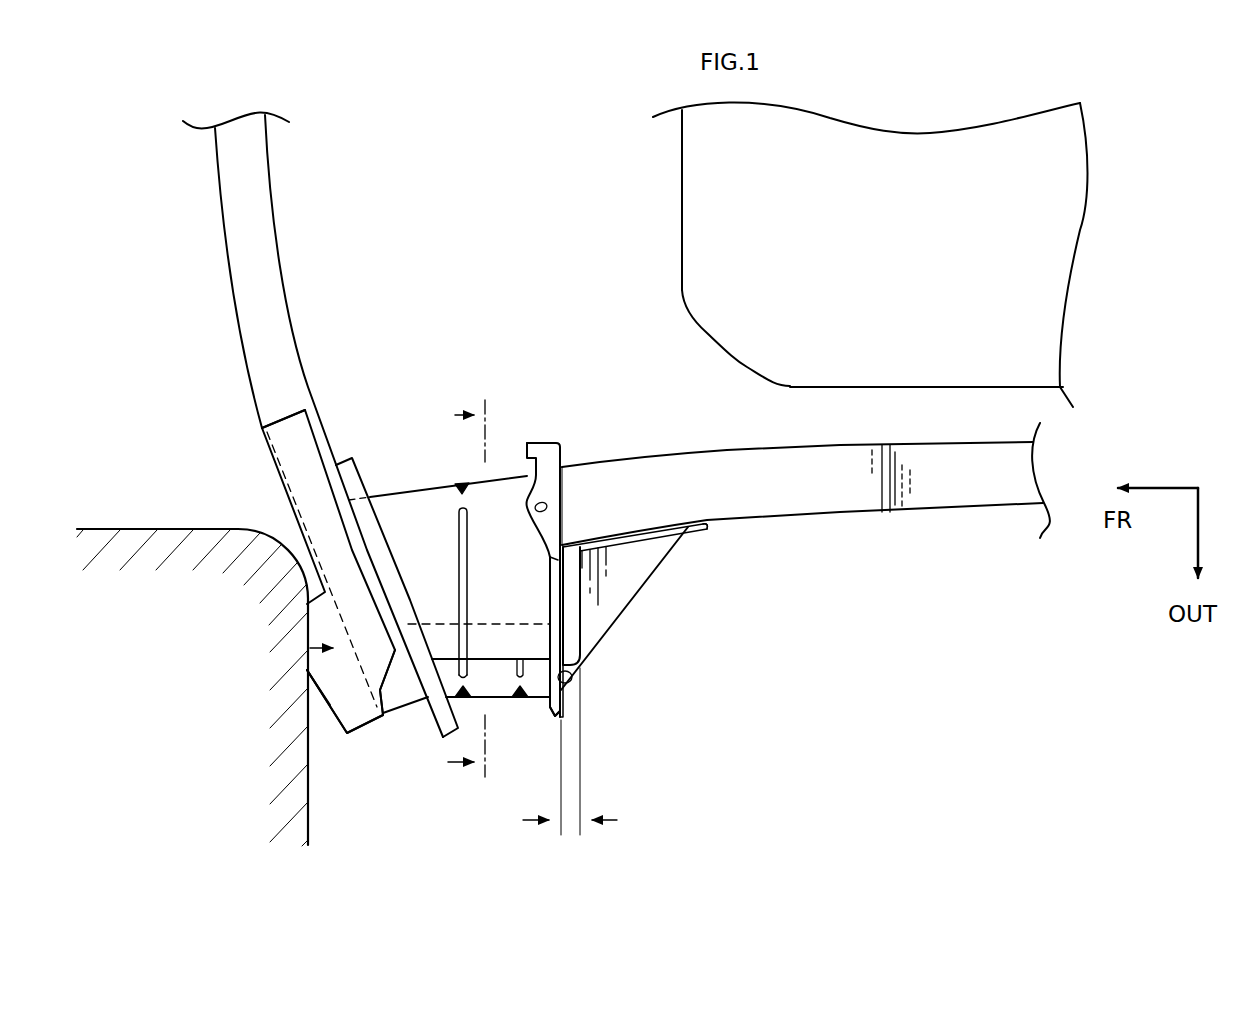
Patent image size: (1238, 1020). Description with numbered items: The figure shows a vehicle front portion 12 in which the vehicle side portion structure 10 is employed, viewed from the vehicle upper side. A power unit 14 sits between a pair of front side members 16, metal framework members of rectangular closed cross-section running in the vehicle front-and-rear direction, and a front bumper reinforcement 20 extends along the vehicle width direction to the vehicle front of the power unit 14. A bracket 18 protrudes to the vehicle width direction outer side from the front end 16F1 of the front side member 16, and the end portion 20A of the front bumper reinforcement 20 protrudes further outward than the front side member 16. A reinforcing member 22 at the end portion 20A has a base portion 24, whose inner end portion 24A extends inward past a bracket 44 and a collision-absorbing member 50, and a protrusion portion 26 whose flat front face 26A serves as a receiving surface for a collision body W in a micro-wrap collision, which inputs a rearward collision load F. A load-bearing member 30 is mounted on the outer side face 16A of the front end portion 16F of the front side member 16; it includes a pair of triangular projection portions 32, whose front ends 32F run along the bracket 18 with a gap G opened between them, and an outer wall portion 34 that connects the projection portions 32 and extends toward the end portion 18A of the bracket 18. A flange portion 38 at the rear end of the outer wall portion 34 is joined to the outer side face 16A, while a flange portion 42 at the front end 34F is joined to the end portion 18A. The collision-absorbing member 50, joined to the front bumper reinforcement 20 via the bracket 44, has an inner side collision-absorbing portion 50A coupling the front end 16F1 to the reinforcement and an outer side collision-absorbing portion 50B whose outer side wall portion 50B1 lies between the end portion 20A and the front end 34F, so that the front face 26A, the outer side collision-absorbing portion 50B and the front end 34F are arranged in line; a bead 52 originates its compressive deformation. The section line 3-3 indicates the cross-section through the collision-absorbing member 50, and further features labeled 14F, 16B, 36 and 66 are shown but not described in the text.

The vehicle side portion structure 10 is at (688, 800).
The vehicle front portion 12 is at (683, 725).
The power unit 14 is at (840, 254).
The front lower end of door 14F is at (725, 323).
The front side member 16 is at (788, 552).
The outer side face 16A is at (780, 518).
The rocker upper wall 16B is at (625, 458).
The front end portion 16F is at (653, 480).
The front end 16F1 is at (563, 467).
The bracket 18 is at (520, 667).
The end portion 18A is at (543, 692).
The front bumper reinforcement 20 is at (291, 473).
The end portion 20A is at (415, 688).
The reinforcing member 22 is at (294, 602).
The base portion 24 is at (329, 582).
The inner end portion 24A is at (298, 437).
The protrusion portion 26 is at (290, 710).
The front face 26A is at (300, 623).
The load-bearing member 30 is at (611, 626).
The projection portion 32 is at (577, 599).
The front end 32F is at (572, 578).
The outer wall portion 34 is at (623, 629).
The front end 34F is at (572, 676).
The upper flange of bracket 36 is at (633, 547).
The flange portion 38 is at (706, 532).
The flange portion 42 is at (566, 706).
The bracket 44 is at (343, 467).
The collision-absorbing member 50 is at (454, 622).
The inner side collision-absorbing portion 50A is at (410, 515).
The outer side collision-absorbing portion 50B is at (496, 753).
The outer side wall portion 50B1 is at (497, 678).
The bead 52 is at (458, 522).
The hidden line 66 is at (446, 620).
The section line 3- 3 is at (456, 589).
The collision load F is at (321, 652).
The gap G is at (570, 762).
The collision body W is at (146, 530).